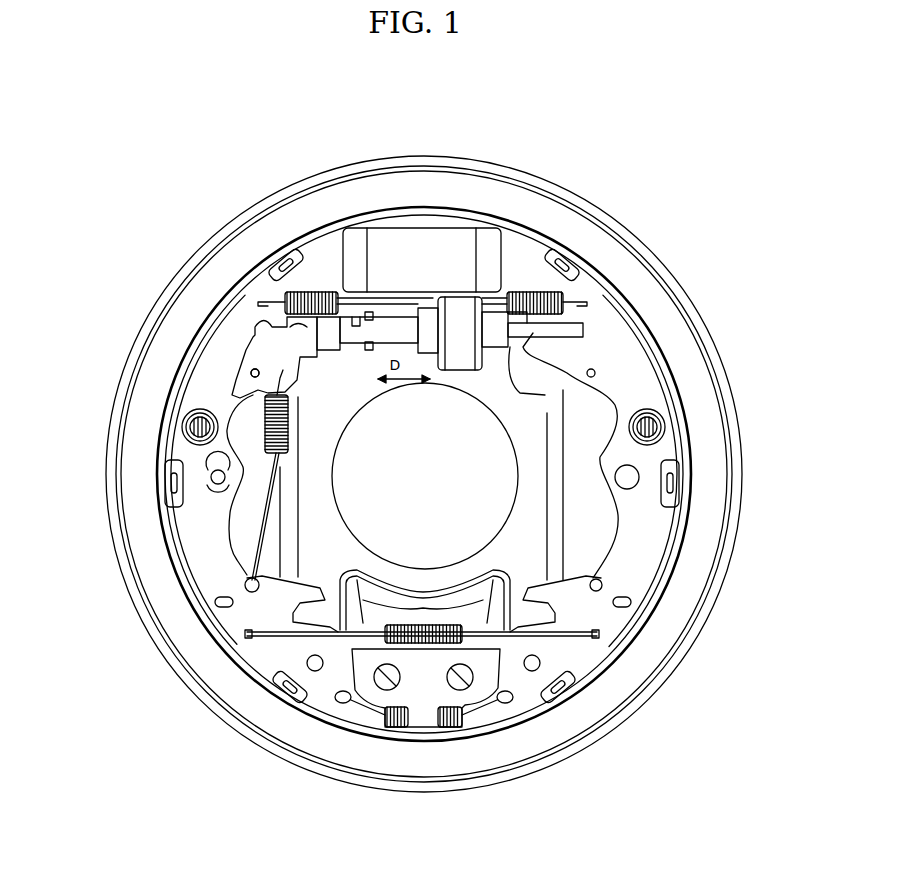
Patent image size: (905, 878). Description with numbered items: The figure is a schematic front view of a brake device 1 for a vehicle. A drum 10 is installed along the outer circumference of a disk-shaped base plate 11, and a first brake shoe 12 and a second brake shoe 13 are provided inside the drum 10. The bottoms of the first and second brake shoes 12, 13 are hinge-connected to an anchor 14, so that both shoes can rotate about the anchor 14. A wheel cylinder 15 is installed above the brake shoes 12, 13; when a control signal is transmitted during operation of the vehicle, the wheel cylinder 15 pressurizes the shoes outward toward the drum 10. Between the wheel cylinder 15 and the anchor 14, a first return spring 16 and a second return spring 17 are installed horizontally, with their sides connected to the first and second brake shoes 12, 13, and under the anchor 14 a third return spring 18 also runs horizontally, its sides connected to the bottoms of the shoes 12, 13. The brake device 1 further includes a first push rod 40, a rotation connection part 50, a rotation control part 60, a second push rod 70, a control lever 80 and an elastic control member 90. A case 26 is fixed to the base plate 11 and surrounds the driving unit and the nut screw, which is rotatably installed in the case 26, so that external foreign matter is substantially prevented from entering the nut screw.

The brake device 1 is at (614, 150).
The drum 10 is at (687, 367).
The base plate 11 is at (593, 513).
The first brake shoe 12 is at (617, 373).
The second brake shoe 13 is at (233, 340).
The anchor 14 is at (423, 693).
The wheel cylinder 15 is at (380, 252).
The first return spring 16 is at (550, 297).
The second return spring 17 is at (560, 637).
The third return spring 18 is at (480, 712).
The case 26 is at (510, 360).
The first push rod 40 is at (583, 317).
The rotation connection part 50 is at (405, 308).
The rotation control part 60 is at (273, 393).
The second push rod 70 is at (277, 321).
The control lever 80 is at (306, 305).
The elastic control member 90 is at (267, 423).